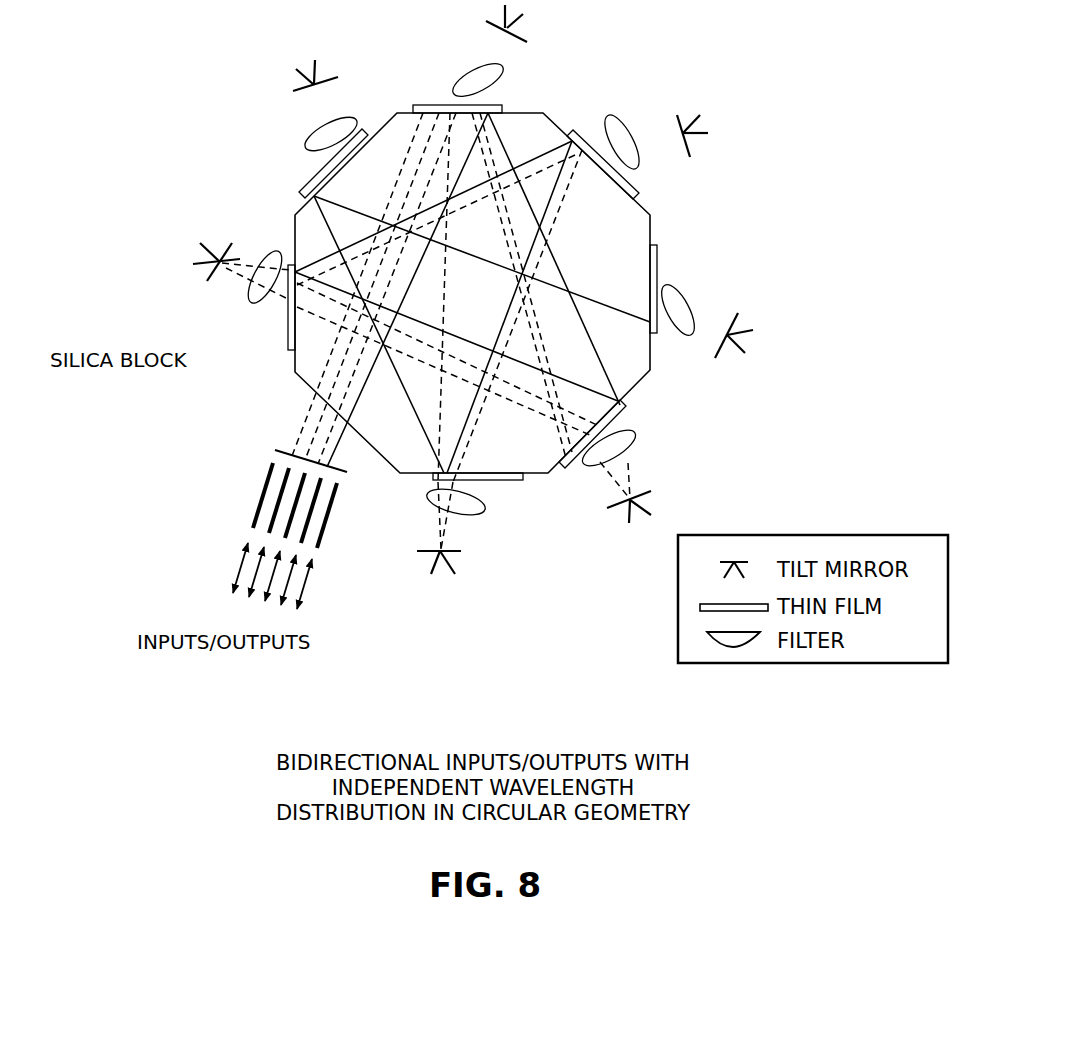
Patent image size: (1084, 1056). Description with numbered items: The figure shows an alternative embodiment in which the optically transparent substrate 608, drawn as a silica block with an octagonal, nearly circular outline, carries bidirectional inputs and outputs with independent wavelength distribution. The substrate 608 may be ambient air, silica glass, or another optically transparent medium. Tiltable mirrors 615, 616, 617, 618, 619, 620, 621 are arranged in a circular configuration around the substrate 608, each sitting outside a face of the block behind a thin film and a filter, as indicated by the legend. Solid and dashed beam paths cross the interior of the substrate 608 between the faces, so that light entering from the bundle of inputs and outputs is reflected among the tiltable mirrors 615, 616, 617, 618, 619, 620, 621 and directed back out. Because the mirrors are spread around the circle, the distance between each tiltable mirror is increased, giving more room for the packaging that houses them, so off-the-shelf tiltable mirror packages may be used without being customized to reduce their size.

The optically transparent substrate 608 is at (283, 370).
The tiltable mirror 615 is at (533, 23).
The tiltable mirror 616 is at (718, 127).
The tiltable mirror 617 is at (752, 315).
The tiltable mirror 618 is at (660, 492).
The tiltable mirror 619 is at (473, 572).
The tiltable mirror 620 is at (172, 272).
The tiltable mirror 621 is at (268, 80).